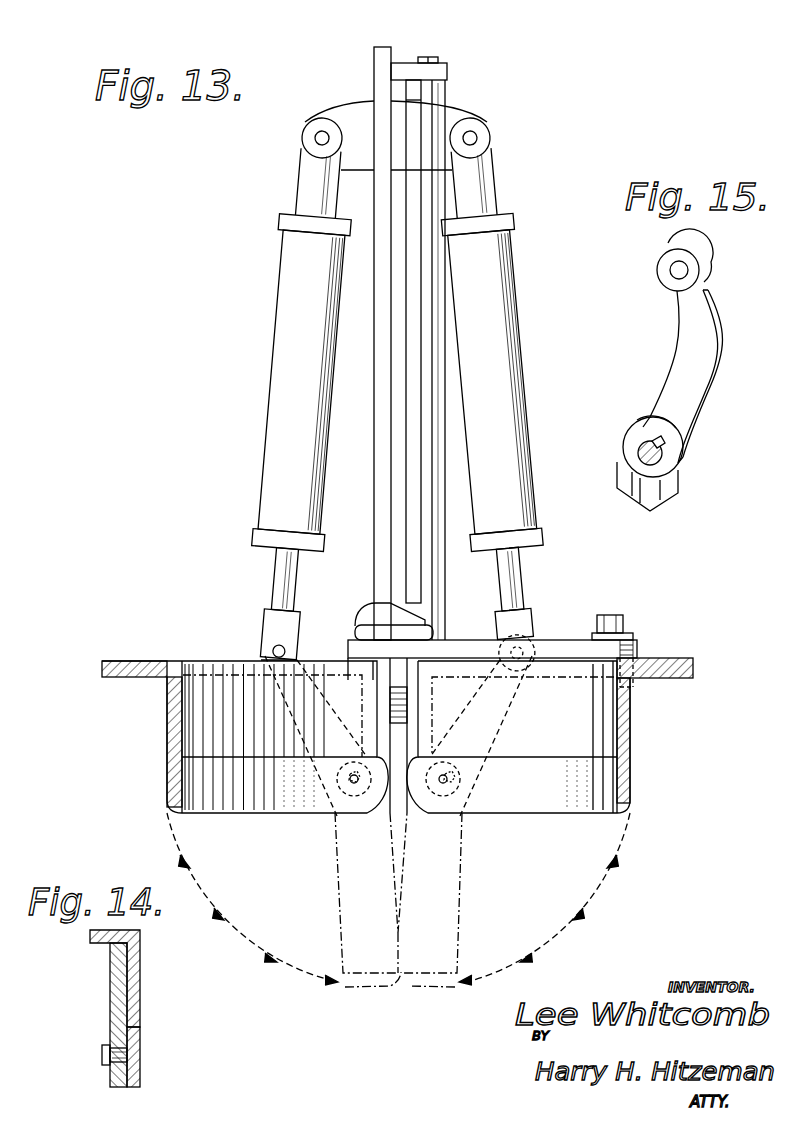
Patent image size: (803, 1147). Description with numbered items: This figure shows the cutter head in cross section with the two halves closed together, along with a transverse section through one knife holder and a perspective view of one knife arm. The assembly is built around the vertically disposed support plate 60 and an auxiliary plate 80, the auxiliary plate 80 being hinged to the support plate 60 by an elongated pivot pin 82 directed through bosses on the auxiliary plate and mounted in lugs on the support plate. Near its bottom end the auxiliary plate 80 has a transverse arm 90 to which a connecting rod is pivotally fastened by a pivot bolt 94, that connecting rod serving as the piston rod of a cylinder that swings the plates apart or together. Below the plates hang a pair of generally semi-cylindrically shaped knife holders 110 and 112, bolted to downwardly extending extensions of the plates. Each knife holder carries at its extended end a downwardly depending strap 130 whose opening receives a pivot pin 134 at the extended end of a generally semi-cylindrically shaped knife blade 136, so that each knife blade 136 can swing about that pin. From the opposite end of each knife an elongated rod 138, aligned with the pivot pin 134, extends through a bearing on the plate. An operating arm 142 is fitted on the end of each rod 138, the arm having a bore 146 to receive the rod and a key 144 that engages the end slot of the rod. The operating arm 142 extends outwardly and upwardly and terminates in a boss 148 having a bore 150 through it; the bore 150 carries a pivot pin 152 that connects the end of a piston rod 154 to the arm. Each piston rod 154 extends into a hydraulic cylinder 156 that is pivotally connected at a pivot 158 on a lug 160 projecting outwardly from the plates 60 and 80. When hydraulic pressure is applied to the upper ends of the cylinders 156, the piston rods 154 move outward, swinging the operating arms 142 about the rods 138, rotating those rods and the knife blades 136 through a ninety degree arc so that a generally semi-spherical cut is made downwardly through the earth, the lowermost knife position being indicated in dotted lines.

In FIG. 13, the support plate 60 is at (374, 61).
In FIG. 13, the auxiliary plate 80 is at (412, 322).
In FIG. 13, the pivot pin 82 is at (436, 58).
In FIG. 13, the transverse arm 90 is at (637, 643).
In FIG. 13, the pivot bolt 94 is at (596, 619).
In FIG. 13, the knife holder 110 is at (126, 678).
In FIG. 14, the knife holder 110 is at (137, 987).
In FIG. 13, the knife holder 112 is at (630, 729).
In FIG. 14, the strap 130 is at (108, 1000).
In FIG. 14, the pivot pin 134 is at (103, 1058).
In FIG. 13, the knife blade 136 is at (170, 786).
In FIG. 14, the knife blade 136 is at (140, 1070).
In FIG. 13, the rod 138 is at (340, 805).
In FIG. 13, the operating arm 142 is at (465, 722).
In FIG. 15, the operating arm 142 is at (680, 337).
In FIG. 13, the key 144 is at (338, 783).
In FIG. 15, the key 144 is at (661, 446).
In FIG. 15, the bore 146 is at (640, 462).
In FIG. 13, the boss 148 is at (258, 656).
In FIG. 15, the boss 148 is at (701, 255).
In FIG. 13, the bore 150 is at (262, 650).
In FIG. 15, the bore 150 is at (670, 270).
In FIG. 13, the pivot pin 152 is at (300, 645).
In FIG. 13, the piston rod 154 is at (280, 578).
In FIG. 13, the hydraulic cylinder 156 is at (262, 396).
In FIG. 13, the pivotal connection 158 is at (318, 140).
In FIG. 13, the lug 160 is at (358, 100).